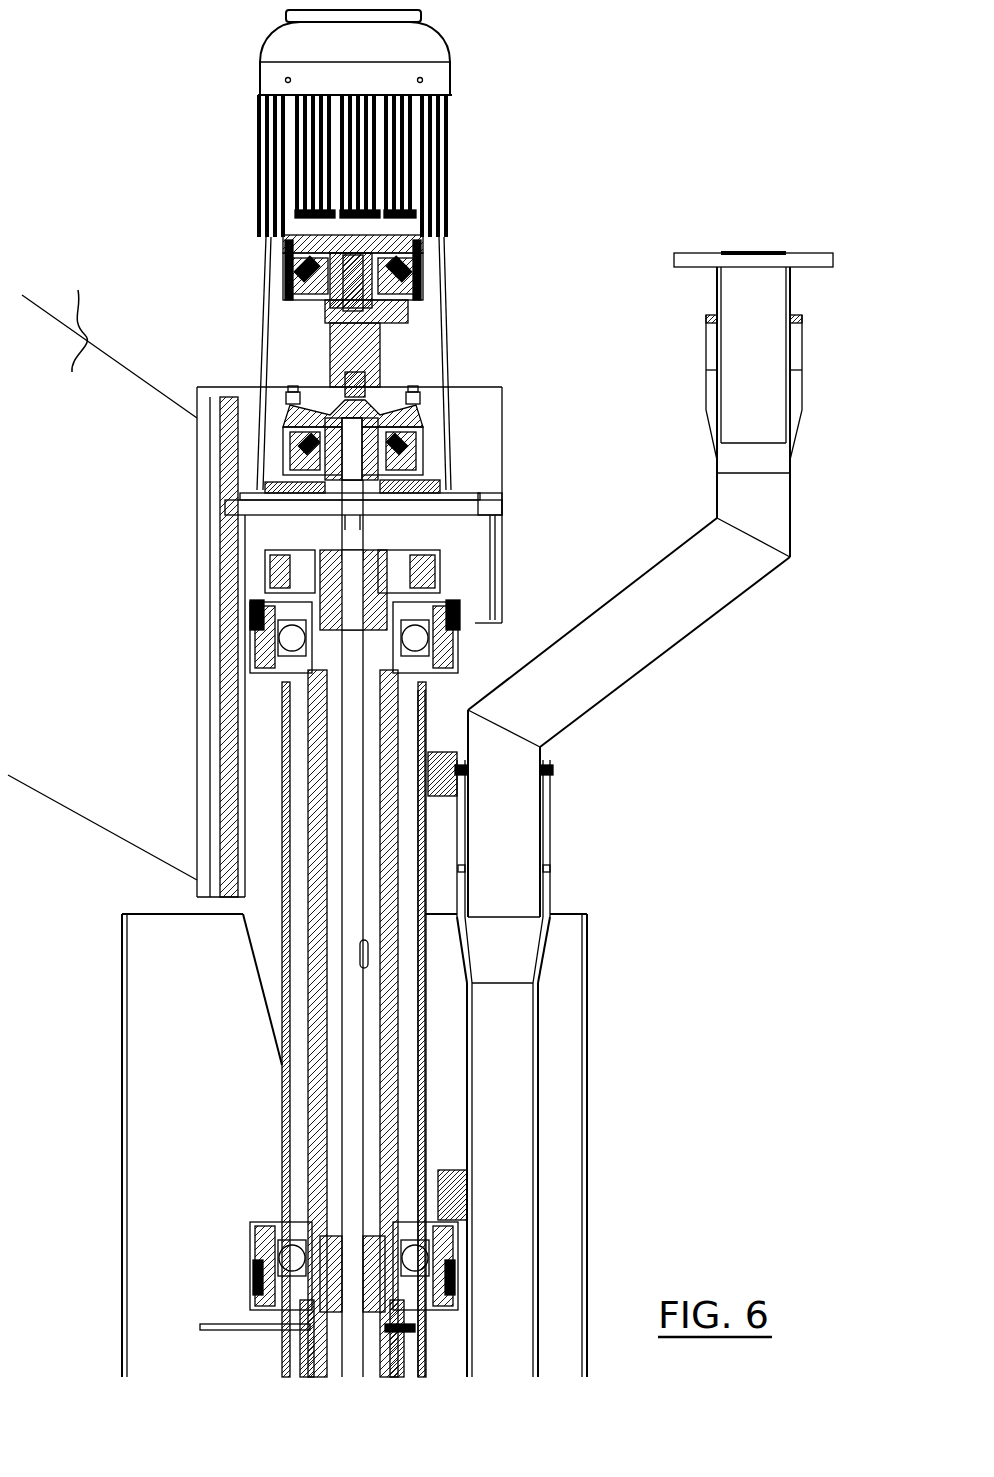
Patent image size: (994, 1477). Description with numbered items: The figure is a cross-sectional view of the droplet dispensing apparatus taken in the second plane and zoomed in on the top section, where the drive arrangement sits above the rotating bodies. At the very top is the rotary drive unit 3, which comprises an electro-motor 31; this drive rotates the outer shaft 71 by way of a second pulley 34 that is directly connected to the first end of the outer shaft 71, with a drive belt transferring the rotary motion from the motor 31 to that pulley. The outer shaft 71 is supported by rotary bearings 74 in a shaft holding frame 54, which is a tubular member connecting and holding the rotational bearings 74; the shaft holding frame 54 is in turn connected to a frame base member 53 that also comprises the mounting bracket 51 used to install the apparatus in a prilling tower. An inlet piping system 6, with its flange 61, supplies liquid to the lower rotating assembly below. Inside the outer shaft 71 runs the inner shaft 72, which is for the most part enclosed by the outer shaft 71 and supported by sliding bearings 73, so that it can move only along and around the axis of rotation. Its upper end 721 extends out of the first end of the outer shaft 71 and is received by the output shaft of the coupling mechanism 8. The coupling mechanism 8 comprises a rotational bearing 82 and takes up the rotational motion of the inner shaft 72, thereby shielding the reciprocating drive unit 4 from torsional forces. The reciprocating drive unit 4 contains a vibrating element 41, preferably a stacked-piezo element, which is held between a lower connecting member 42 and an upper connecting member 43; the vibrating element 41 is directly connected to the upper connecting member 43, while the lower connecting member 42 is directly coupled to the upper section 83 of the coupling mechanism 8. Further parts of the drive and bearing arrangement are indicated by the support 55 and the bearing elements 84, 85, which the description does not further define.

The rotary drive unit 3 is at (444, 250).
The motor 31 is at (408, 42).
The reciprocating drive unit 4 is at (415, 370).
The vibrating element 41 is at (405, 318).
The lower connecting member 42 is at (345, 346).
The upper connecting member 43 is at (340, 270).
The mounting bracket 51 is at (255, 580).
The frame base member 53 is at (212, 690).
The shaft holding frame 54 is at (420, 892).
The support 55 is at (420, 335).
The inlet piping system 6 is at (680, 603).
The inlet flange 61 is at (825, 262).
The outer shaft 71 is at (316, 775).
The inner shaft 72 is at (352, 740).
The upper end of the inner shaft 721 is at (355, 540).
The sliding bearings 73 is at (370, 578).
The rotary bearings 74 is at (412, 640).
The coupling mechanism 8 is at (462, 460).
The rotational bearing 82 is at (400, 445).
The upper section of the coupling mechanism 83 is at (405, 420).
The bearing 84 is at (242, 276).
The bearing hub 85 is at (320, 280).
The second pulley 34 is at (430, 570).